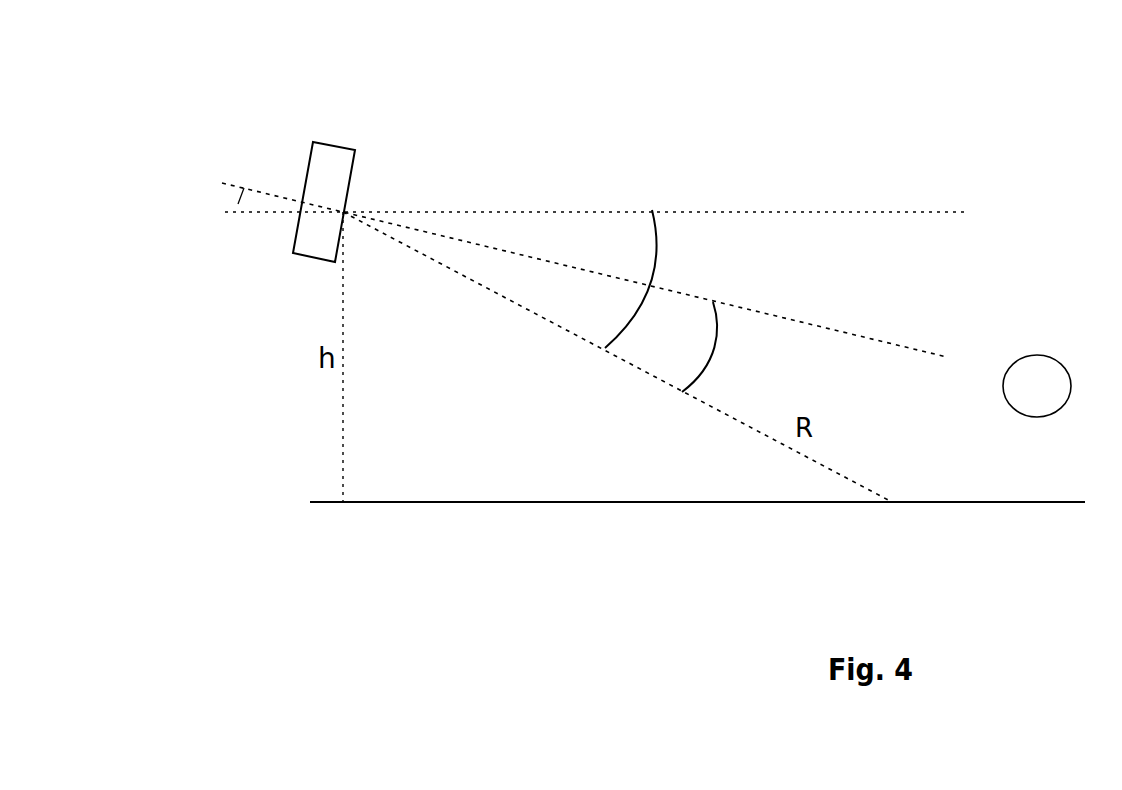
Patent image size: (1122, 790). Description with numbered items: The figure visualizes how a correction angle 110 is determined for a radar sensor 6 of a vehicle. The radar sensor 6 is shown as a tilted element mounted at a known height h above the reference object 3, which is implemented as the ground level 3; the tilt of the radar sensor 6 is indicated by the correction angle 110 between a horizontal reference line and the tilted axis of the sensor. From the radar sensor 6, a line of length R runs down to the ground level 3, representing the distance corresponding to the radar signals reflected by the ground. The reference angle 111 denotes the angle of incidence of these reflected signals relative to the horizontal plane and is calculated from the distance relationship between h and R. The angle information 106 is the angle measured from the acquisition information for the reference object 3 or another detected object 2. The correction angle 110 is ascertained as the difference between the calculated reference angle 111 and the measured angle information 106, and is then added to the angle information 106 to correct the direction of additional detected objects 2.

The correction angle 110 is at (238, 212).
The radar sensor 6 is at (355, 157).
The reference angle 111 is at (658, 252).
The angle information 106 is at (717, 347).
The detected object 2 is at (1029, 402).
The reference object 3 is at (697, 525).